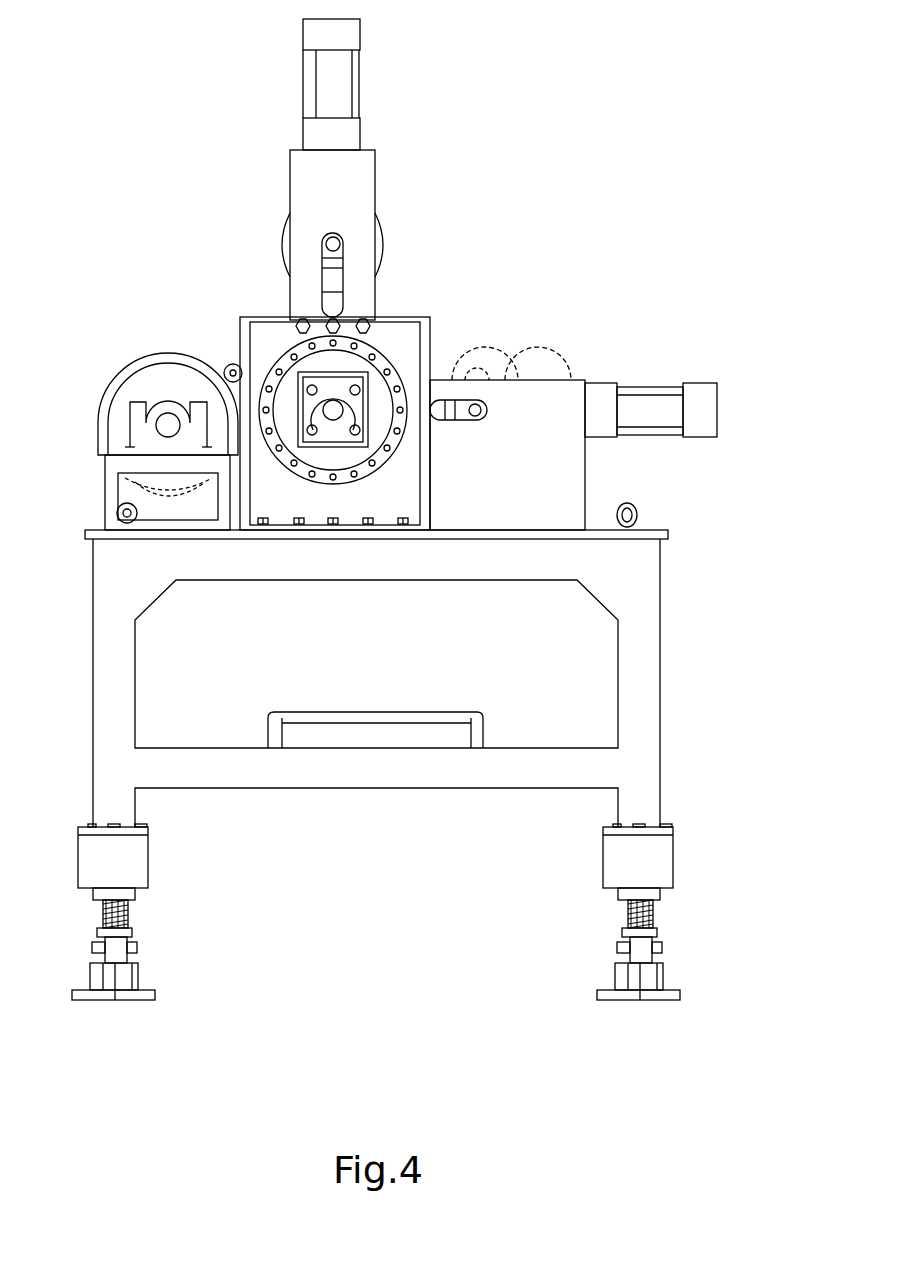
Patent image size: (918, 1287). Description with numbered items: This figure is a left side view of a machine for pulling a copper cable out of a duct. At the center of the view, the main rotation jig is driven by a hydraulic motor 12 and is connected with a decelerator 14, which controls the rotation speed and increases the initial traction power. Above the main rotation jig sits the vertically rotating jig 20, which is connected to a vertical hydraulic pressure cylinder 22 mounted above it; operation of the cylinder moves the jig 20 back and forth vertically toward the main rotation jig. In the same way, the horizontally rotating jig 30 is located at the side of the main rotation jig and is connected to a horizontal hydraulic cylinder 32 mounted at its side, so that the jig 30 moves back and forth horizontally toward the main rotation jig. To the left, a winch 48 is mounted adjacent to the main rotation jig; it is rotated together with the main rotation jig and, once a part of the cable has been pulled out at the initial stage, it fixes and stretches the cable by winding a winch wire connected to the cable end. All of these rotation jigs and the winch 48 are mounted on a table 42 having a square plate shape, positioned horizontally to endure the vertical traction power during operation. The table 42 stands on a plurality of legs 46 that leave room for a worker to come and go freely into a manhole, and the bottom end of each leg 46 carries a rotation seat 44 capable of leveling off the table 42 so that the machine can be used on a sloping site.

The hydraulic motor 12 is at (353, 387).
The decelerator 14 is at (373, 350).
The vertically rotating jig 20 is at (386, 240).
The vertical hydraulic pressure cylinder 22 is at (345, 33).
The horizontally rotating jig 30 is at (500, 376).
The horizontal hydraulic cylinder 32 is at (700, 398).
The table 42 is at (668, 533).
The rotation seat 44 is at (655, 980).
The leg 46 is at (640, 684).
The winch 48 is at (170, 378).